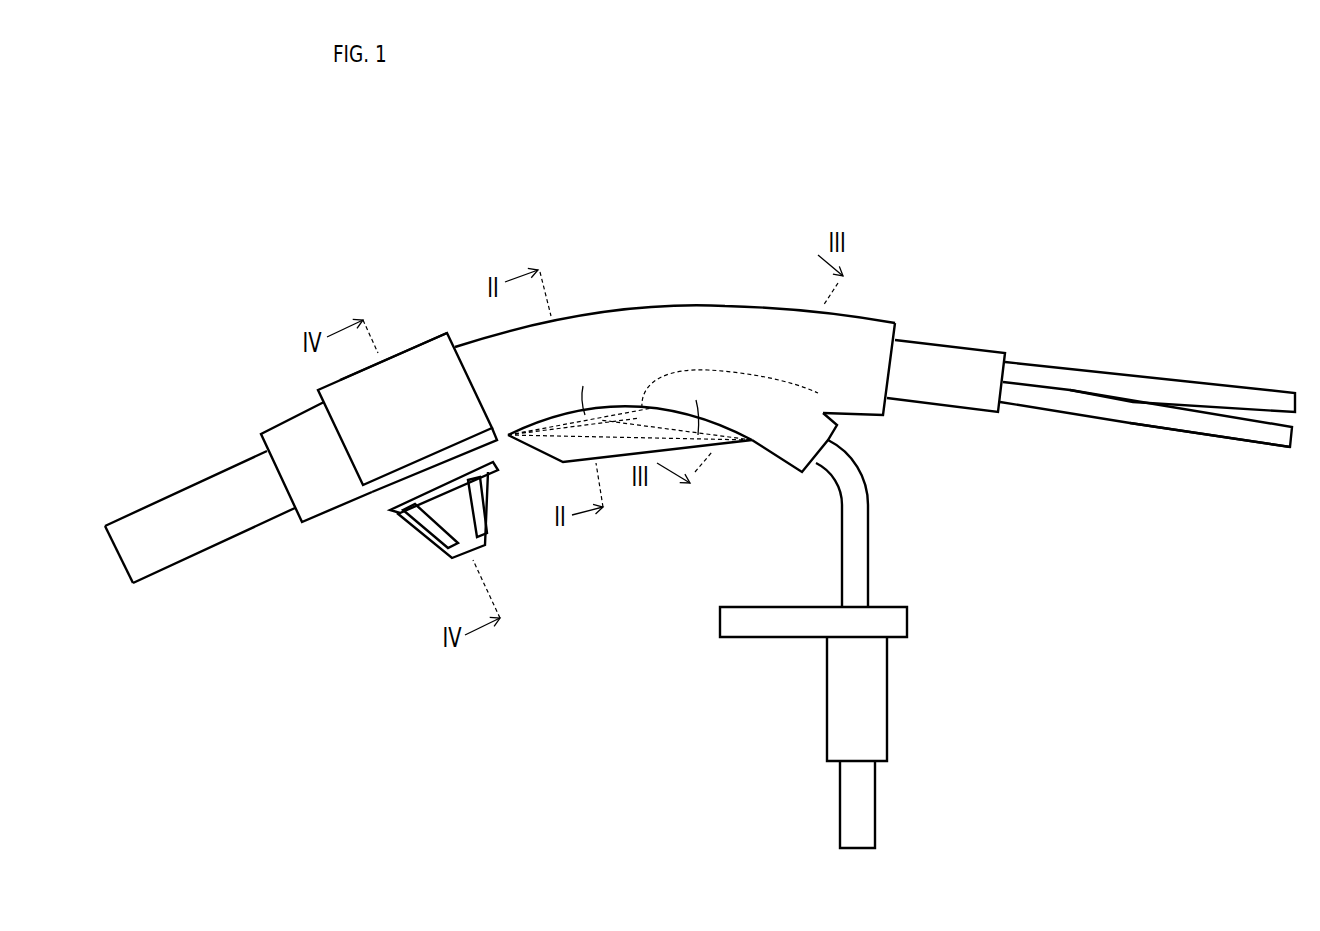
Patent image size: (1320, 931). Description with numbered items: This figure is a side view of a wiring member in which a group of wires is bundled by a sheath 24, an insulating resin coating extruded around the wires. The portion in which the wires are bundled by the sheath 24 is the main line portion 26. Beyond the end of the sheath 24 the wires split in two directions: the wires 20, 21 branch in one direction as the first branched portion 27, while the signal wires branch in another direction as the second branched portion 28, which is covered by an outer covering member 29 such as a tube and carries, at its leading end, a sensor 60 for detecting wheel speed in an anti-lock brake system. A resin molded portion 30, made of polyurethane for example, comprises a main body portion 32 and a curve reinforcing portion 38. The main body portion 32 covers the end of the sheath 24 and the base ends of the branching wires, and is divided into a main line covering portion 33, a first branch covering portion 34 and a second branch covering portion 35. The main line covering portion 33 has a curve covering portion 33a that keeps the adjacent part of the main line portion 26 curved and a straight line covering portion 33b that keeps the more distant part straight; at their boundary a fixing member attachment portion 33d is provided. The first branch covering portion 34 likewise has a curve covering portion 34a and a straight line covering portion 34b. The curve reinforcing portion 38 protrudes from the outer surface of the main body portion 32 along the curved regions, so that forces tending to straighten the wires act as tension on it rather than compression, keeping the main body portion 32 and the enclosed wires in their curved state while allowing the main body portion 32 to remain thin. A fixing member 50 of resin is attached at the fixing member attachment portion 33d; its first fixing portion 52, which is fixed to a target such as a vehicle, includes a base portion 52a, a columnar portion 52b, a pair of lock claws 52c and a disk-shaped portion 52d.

The wire 20 is at (1222, 390).
The wire 21 is at (1268, 435).
The sheath 24 is at (165, 505).
The main line portion 26 is at (208, 552).
The first branched portion 27 is at (1178, 437).
The second branched portion 28 is at (842, 556).
The outer covering member 29 is at (868, 556).
The resin molded portion 30 is at (683, 374).
The main body portion 32 is at (636, 309).
The main line covering portion 33 is at (362, 369).
The curve covering portion 33a is at (473, 338).
The straight line covering portion 33b is at (300, 414).
The fixing member attachment portion 33d is at (393, 332).
The first branch covering portion 34 is at (936, 304).
The curve covering portion 34a is at (887, 320).
The straight line covering portion 34b is at (928, 342).
The second branch covering portion 35 is at (790, 454).
The curve reinforcing portion 38 is at (605, 462).
The fixing member 50 is at (448, 530).
The first fixing portion 52 is at (448, 511).
The base portion 52a is at (380, 494).
The columnar portion 52b is at (485, 546).
The lock claw 52c is at (408, 512).
The disk-shaped portion 52d is at (390, 516).
The sensor 60 is at (887, 690).